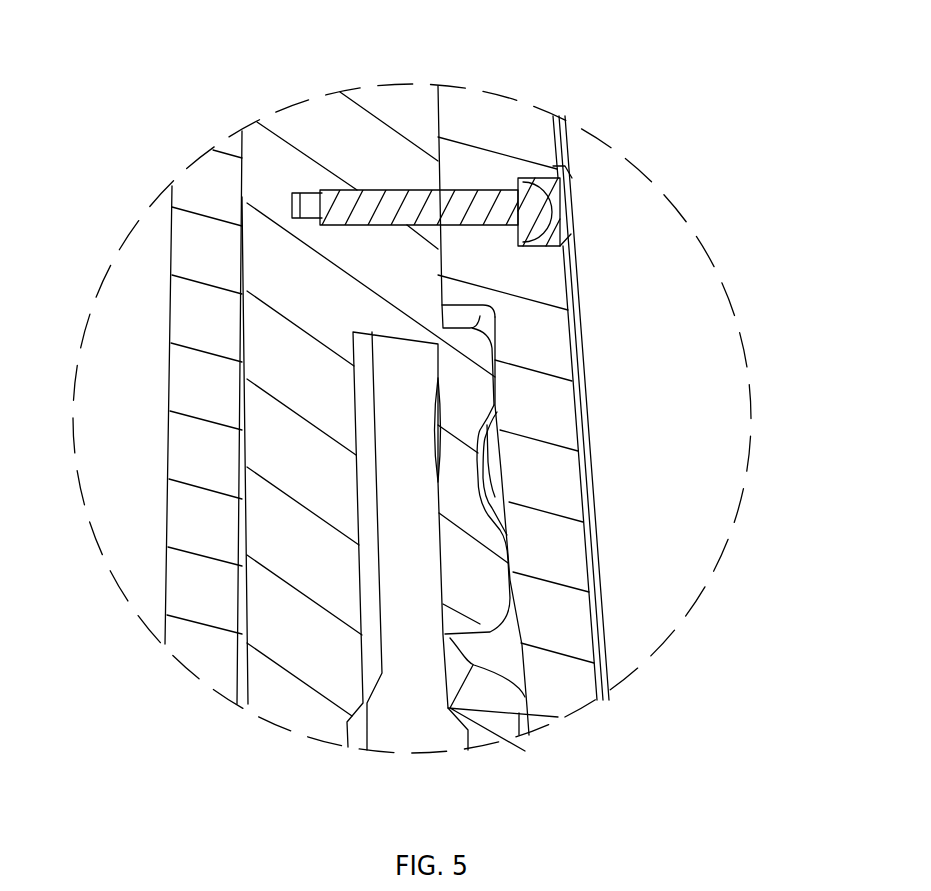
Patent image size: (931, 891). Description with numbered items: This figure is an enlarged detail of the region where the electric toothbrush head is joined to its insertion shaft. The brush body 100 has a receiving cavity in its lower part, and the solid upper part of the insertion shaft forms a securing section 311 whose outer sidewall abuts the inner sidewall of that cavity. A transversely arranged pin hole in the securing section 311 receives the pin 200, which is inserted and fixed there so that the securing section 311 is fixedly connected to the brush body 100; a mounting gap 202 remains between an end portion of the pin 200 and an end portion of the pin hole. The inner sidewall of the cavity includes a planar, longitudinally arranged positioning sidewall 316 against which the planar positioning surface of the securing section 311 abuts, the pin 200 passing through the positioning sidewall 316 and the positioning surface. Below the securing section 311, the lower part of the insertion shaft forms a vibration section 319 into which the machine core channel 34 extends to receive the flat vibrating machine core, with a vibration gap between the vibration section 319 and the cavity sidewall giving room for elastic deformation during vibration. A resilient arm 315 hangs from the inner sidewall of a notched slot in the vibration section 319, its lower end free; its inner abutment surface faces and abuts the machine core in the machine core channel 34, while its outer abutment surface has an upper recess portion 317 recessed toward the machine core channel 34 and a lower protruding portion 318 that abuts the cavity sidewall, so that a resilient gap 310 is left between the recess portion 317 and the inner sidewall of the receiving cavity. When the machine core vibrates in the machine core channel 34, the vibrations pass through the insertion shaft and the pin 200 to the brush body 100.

The brush body 100 is at (192, 390).
The securing section 311 is at (280, 180).
The mounting gap 202 is at (312, 207).
The pin 200 is at (441, 193).
The recess portion 317 is at (480, 447).
The resilient gap 310 is at (497, 467).
The protruding portion 318 is at (513, 562).
The resilient arm 315 is at (472, 578).
The vibration section 319 is at (287, 440).
The positioning sidewall 316 is at (440, 497).
The machine core channel 34 is at (413, 538).